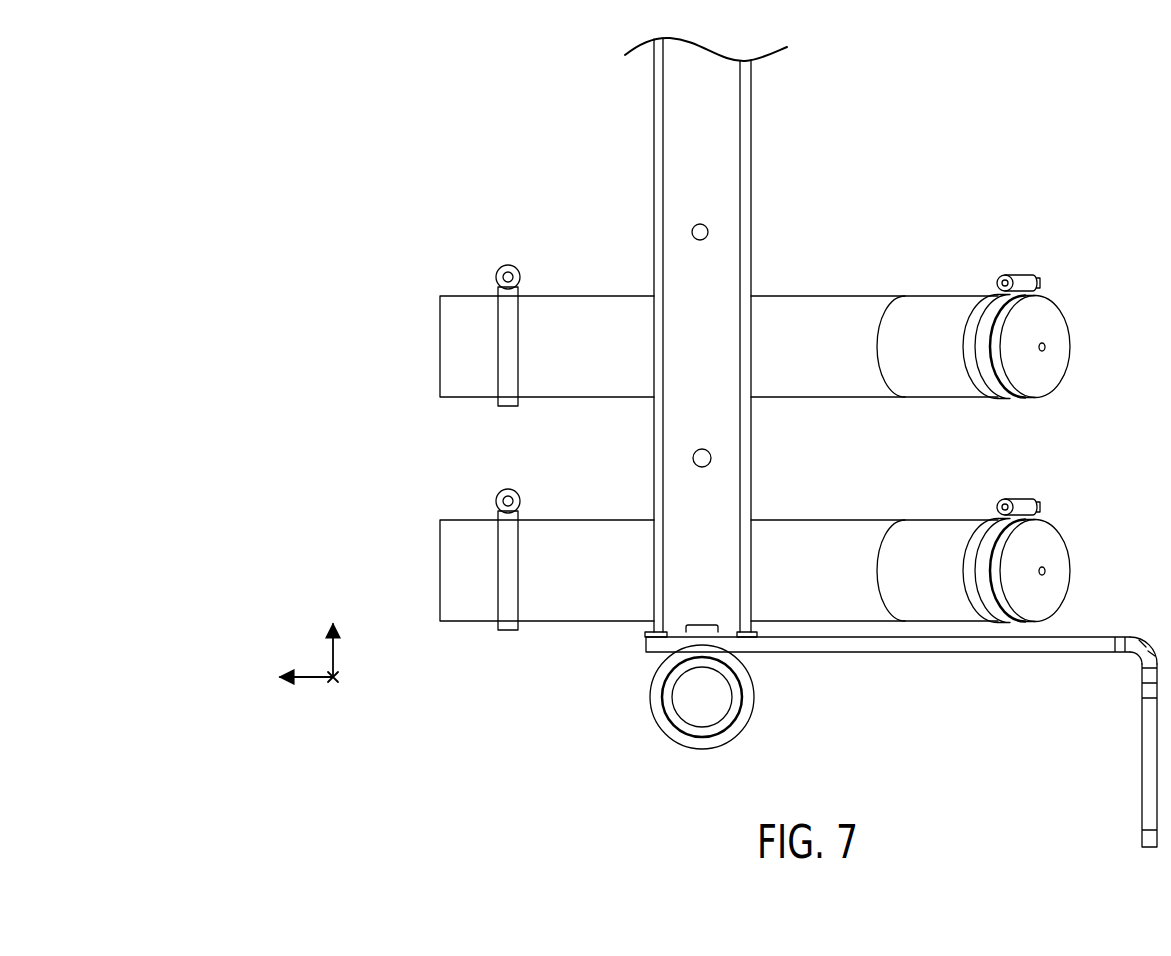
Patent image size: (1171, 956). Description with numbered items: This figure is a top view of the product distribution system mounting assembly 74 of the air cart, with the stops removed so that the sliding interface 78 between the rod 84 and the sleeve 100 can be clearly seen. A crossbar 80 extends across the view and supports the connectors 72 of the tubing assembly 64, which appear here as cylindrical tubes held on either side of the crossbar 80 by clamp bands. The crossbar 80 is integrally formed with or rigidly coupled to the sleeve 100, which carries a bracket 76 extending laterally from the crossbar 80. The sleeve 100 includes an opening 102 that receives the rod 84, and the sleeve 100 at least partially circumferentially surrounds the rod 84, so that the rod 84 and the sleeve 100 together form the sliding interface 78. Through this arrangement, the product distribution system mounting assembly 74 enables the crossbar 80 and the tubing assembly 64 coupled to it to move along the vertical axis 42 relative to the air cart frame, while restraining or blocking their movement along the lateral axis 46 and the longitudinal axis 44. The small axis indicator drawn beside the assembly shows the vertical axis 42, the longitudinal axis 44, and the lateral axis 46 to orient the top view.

The vertical axis 42 is at (338, 686).
The longitudinal axis 44 is at (308, 681).
The lateral axis 46 is at (334, 653).
The tubing assembly 64 is at (755, 411).
The connector 72 is at (870, 296).
The product distribution system mounting assembly 74 is at (684, 728).
The bracket 76 is at (895, 645).
The sliding interface 78 is at (653, 725).
The crossbar 80 is at (727, 480).
The rod 84 is at (735, 682).
The sleeve 100 is at (733, 733).
The opening 102 is at (675, 722).